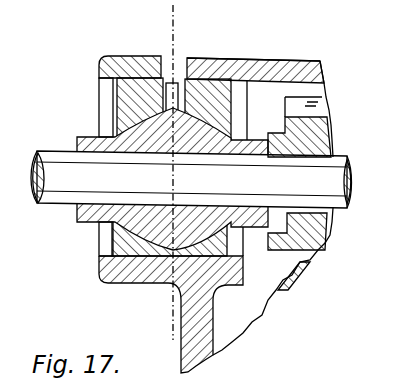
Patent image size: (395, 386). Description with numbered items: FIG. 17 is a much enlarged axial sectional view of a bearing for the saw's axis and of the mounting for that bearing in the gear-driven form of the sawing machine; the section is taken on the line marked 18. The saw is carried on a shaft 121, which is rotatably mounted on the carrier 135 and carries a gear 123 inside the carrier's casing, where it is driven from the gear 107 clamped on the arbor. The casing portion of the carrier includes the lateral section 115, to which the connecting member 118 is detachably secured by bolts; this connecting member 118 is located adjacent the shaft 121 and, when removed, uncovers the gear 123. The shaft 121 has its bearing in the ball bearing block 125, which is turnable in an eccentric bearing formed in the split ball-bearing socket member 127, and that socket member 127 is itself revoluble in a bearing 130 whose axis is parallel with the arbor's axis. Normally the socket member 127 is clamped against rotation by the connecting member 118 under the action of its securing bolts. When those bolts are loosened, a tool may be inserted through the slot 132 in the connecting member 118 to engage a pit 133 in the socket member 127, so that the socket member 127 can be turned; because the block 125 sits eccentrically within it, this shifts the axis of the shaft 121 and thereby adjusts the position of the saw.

The gear 107 is at (285, 272).
The lateral section 115 is at (123, 278).
The connecting member 118 is at (250, 62).
The shaft 121 is at (191, 179).
The gear 123 is at (330, 143).
The ball bearing block 125 is at (101, 280).
The split ball-bearing socket member 127 is at (117, 104).
The bearing 130 is at (207, 72).
The slot 132 is at (175, 80).
The pit 133 is at (168, 78).
The carrier 135 is at (212, 333).
The section line 18- 18 is at (163, 23).